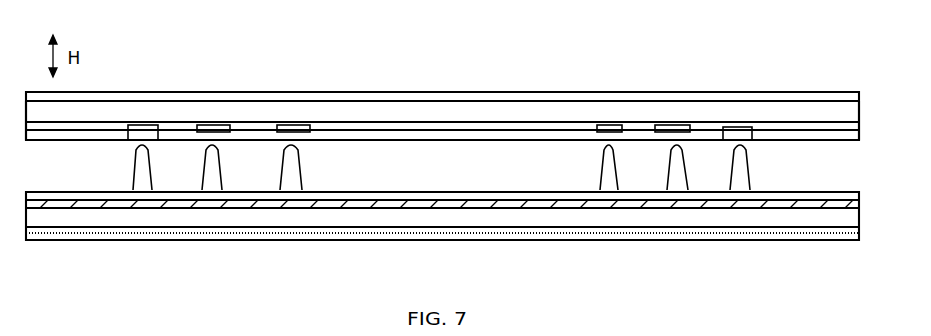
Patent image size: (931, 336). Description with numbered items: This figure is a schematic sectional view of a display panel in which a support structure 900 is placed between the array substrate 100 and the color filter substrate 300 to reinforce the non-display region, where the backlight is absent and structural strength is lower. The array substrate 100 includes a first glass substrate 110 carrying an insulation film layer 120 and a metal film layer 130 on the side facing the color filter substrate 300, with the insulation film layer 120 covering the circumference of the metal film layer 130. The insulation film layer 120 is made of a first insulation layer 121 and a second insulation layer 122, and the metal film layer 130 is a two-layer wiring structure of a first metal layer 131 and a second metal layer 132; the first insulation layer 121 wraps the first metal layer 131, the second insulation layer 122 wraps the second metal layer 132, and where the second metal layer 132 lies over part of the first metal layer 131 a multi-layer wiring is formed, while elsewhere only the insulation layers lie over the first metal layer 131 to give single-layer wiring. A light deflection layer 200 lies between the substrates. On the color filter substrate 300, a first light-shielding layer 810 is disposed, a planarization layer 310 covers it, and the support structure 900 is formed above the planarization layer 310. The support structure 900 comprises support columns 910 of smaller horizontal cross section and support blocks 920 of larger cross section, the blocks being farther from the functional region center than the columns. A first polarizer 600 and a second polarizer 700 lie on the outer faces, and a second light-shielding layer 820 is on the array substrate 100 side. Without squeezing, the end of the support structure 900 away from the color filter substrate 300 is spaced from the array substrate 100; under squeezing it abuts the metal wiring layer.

The array substrate 100 is at (407, 44).
The first glass substrate 110 is at (373, 112).
The insulation film layer 120 is at (475, 66).
The first insulation layer 121 is at (438, 128).
The second insulation layer 122 is at (464, 139).
The metal film layer 130 is at (730, 63).
The first metal layer 131 is at (600, 124).
The second metal layer 132 is at (740, 127).
The light deflection layer 200 is at (812, 162).
The color filter substrate 300 is at (492, 215).
The planarization layer 310 is at (390, 202).
The first polarizer 600 is at (650, 232).
The second polarizer 700 is at (137, 92).
The first light-shielding layer 810 is at (595, 206).
The second light-shielding layer 820 is at (252, 92).
The support structure 900 is at (133, 278).
The support column 910 is at (210, 192).
The support block 920 is at (135, 192).